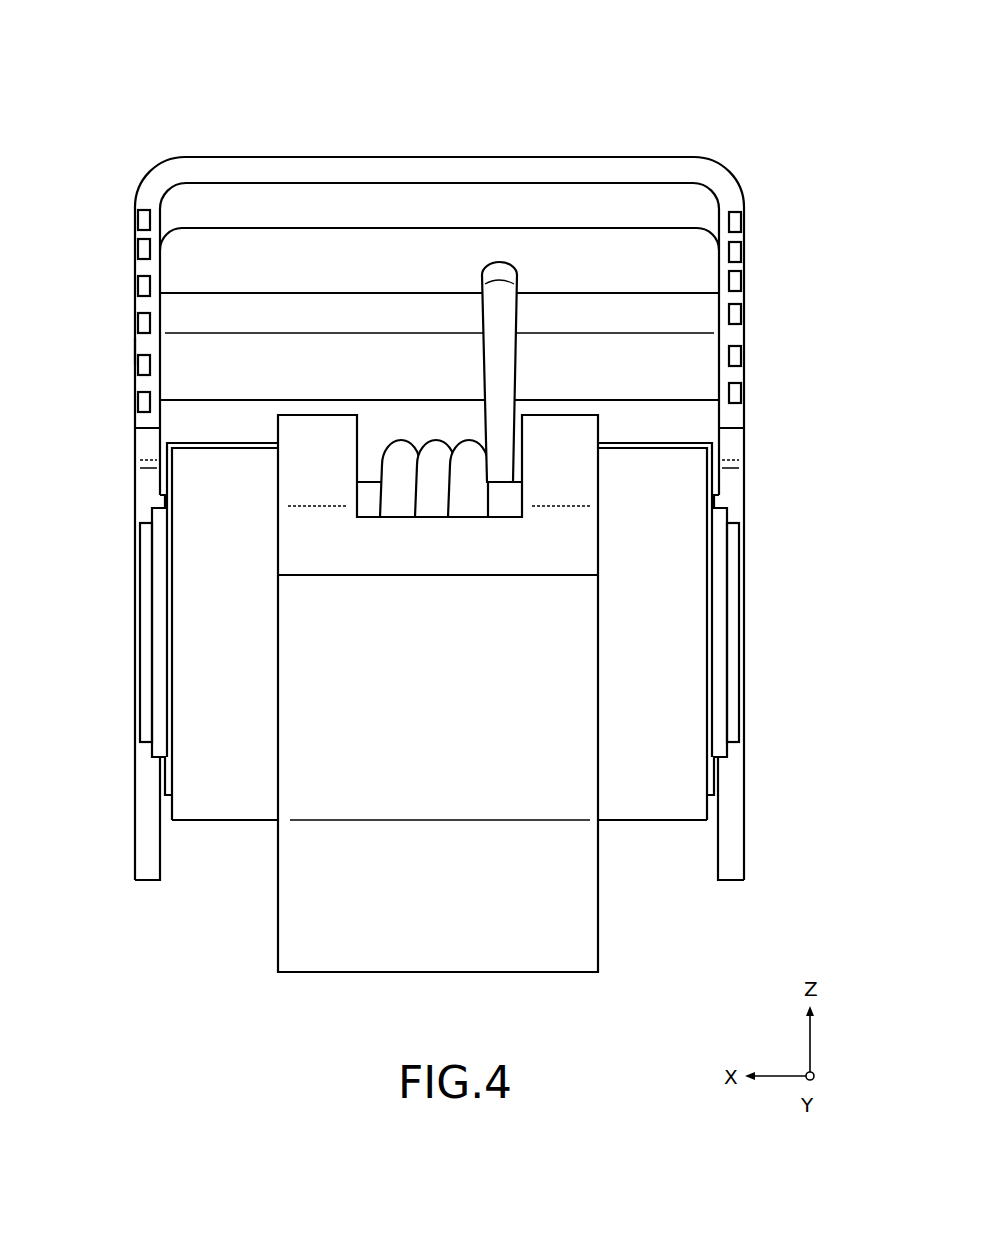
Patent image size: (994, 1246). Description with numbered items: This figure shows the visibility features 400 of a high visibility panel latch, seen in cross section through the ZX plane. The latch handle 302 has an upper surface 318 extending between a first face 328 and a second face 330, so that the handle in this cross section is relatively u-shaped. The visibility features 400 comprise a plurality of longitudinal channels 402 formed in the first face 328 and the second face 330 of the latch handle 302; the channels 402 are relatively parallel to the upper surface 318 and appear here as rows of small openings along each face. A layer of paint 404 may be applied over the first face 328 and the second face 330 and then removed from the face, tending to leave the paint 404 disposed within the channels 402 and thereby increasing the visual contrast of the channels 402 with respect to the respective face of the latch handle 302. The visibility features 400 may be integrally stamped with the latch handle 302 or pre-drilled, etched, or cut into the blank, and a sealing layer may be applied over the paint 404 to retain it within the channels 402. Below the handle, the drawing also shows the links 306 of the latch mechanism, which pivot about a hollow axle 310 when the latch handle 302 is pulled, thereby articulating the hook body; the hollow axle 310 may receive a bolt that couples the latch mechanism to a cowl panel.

The latch handle 302 is at (672, 82).
The visibility features 400 is at (119, 199).
The upper surface 318 is at (318, 156).
The first face 328 is at (137, 348).
The second face 330 is at (744, 241).
The longitudinal channels 402 is at (138, 251).
The layer of paint 404 is at (138, 324).
The hollow axle 310 is at (147, 600).
The links 306 is at (232, 568).